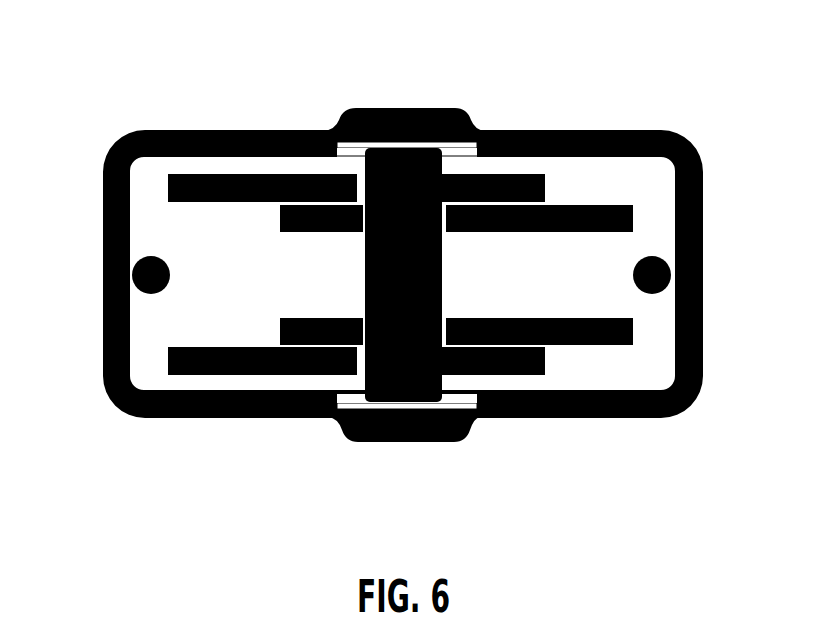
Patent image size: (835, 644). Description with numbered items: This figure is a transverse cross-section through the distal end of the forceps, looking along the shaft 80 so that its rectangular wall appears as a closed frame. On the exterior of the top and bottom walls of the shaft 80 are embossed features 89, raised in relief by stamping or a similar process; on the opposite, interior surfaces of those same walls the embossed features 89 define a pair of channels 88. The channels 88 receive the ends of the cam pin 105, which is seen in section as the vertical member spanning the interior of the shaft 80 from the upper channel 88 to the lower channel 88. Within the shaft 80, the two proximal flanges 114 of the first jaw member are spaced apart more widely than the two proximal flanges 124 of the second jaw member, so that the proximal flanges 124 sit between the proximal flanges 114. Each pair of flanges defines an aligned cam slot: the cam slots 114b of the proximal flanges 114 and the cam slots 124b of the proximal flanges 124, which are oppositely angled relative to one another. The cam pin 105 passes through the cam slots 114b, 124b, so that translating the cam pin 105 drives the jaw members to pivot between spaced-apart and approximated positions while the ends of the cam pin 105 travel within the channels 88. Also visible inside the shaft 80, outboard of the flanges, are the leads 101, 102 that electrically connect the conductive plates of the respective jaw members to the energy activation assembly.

The shaft 80 is at (703, 237).
The embossed features 89 is at (398, 108).
The channels 88 is at (453, 148).
The cam pin 105 is at (364, 275).
The proximal flanges 114 is at (238, 175).
The cam slot 114b is at (345, 176).
The proximal flanges 124 is at (633, 218).
The cam slot 124b is at (478, 200).
The lead 101 is at (133, 276).
The lead 102 is at (670, 275).